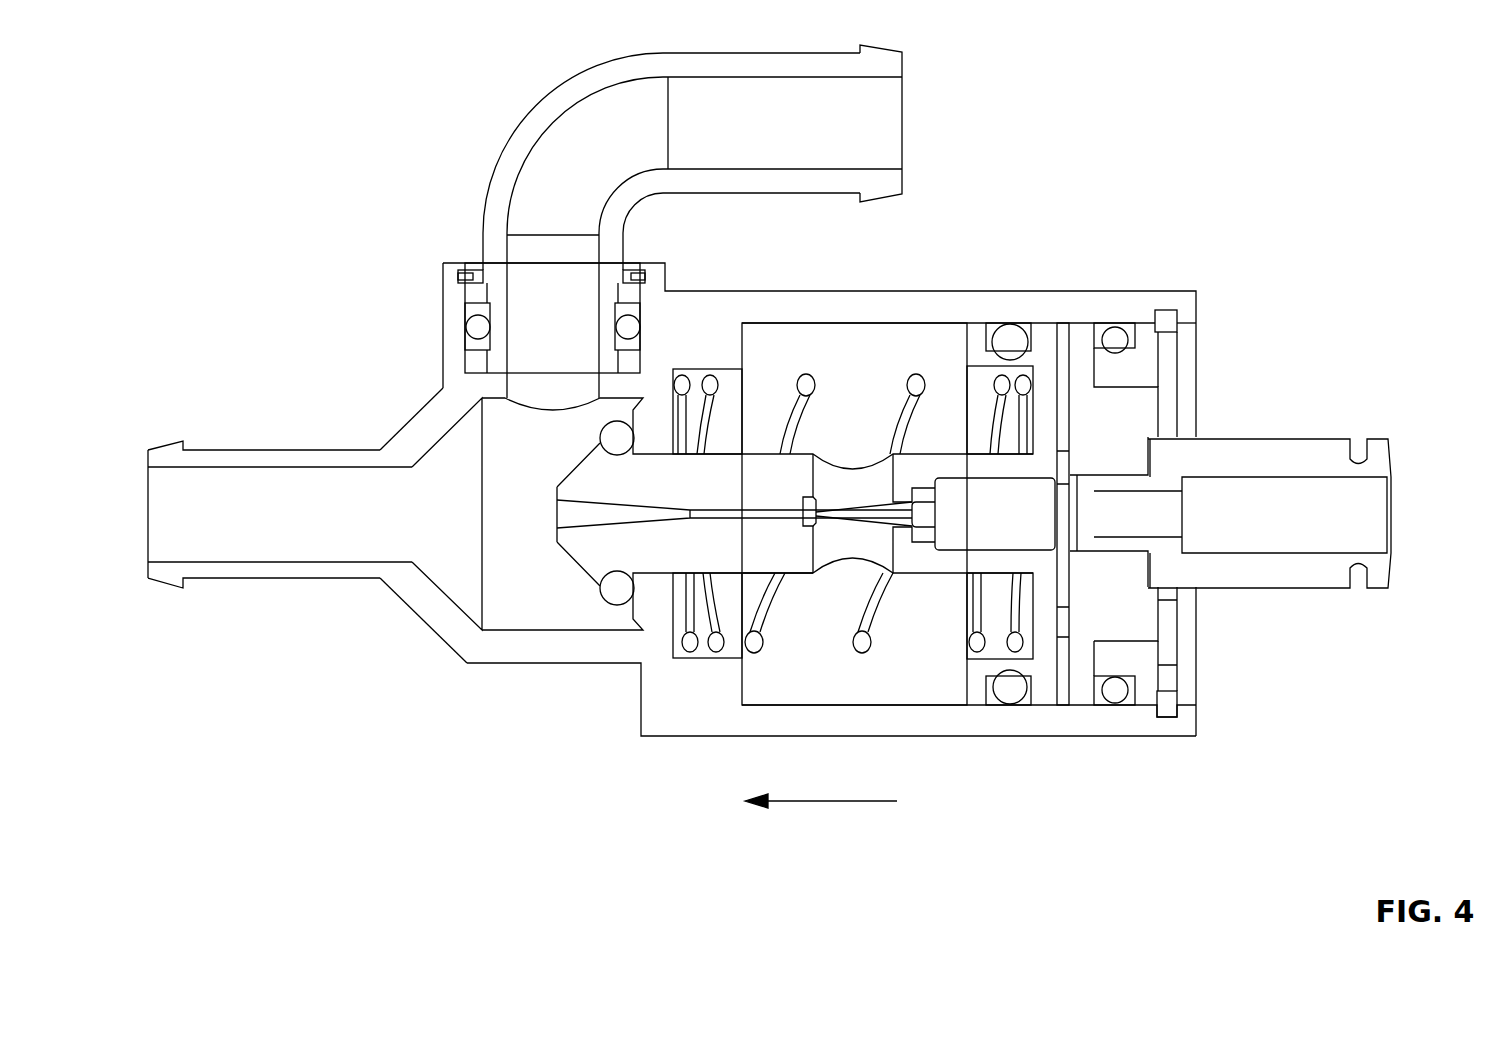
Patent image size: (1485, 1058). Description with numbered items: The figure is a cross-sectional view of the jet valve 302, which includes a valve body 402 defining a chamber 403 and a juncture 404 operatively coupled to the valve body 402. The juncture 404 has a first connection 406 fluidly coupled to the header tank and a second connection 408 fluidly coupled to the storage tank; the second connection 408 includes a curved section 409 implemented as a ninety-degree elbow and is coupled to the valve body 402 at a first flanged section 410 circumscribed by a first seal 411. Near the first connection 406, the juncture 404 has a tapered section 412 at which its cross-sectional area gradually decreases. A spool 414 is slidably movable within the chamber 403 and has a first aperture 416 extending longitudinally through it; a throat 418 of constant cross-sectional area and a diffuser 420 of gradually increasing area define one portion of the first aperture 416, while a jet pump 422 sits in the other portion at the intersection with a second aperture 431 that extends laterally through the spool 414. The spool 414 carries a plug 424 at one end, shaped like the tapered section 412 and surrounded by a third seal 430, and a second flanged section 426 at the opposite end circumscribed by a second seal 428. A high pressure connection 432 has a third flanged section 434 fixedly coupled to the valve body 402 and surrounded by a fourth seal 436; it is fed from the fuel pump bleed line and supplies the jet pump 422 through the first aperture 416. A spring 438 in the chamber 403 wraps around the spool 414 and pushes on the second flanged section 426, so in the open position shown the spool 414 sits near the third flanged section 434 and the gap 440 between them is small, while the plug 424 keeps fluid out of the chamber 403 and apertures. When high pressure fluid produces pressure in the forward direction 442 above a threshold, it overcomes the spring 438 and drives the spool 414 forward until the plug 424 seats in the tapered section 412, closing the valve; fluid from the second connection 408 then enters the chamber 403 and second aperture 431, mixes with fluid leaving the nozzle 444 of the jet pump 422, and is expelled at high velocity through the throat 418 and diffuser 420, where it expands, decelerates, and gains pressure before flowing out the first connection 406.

The jet valve 302 is at (282, 100).
The valve body 402 is at (758, 290).
The chamber 403 is at (852, 323).
The juncture 404 is at (580, 633).
The first connection 406 is at (147, 507).
The second connection 408 is at (902, 130).
The curved section 409 is at (530, 113).
The first flanged section 410 is at (465, 290).
The first seal 411 is at (467, 327).
The tapered section 412 is at (437, 587).
The spool 414 is at (789, 570).
The first aperture 416 is at (550, 514).
The throat 418 is at (778, 505).
The diffuser 420 is at (588, 500).
The jet pump 422 is at (883, 528).
The plug 424 is at (578, 463).
The second flanged section 426 is at (975, 323).
The second seal 428 is at (1008, 705).
The third seal 430 is at (602, 594).
The second aperture 431 is at (858, 460).
The high pressure connection 432 is at (1392, 515).
The third flanged section 434 is at (1147, 323).
The fourth seal 436 is at (1117, 705).
The spring 438 is at (913, 378).
The gap 440 is at (1063, 323).
The forward direction 442 is at (837, 803).
The nozzle 444 is at (810, 521).